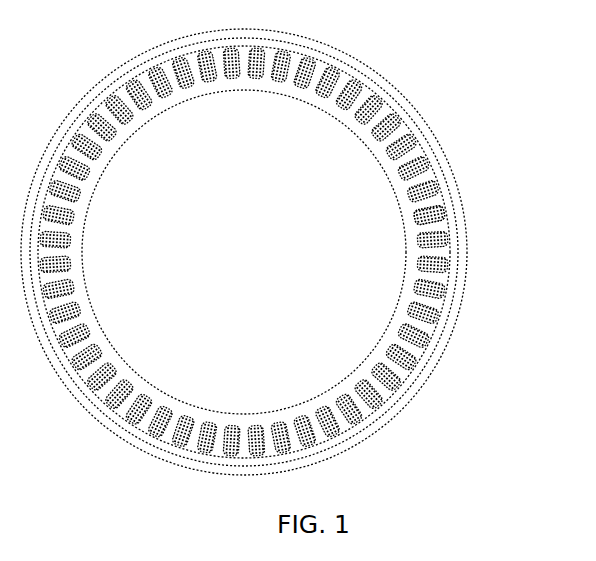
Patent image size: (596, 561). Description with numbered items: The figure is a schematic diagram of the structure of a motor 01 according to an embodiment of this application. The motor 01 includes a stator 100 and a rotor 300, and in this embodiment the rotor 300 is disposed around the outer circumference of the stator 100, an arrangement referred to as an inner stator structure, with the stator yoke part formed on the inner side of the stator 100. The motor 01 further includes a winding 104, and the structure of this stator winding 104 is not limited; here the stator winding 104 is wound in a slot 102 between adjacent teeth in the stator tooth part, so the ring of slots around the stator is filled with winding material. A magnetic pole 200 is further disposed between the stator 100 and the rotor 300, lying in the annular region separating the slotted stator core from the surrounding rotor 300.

The motor 01 is at (446, 47).
The stator 100 is at (413, 278).
The slot 102 is at (437, 212).
The winding 104 is at (435, 216).
The magnetic pole 200 is at (435, 323).
The rotor 300 is at (432, 153).